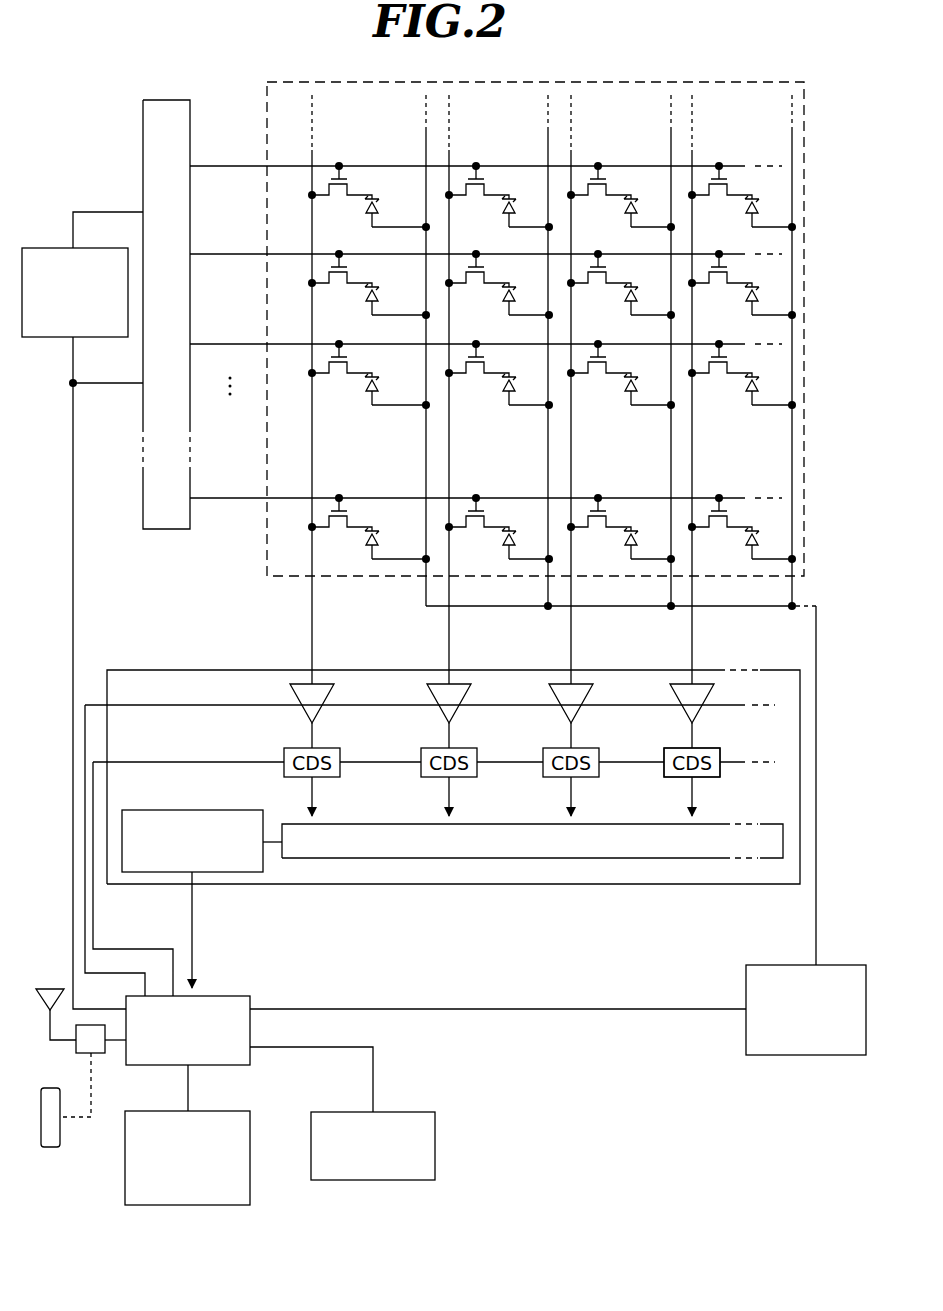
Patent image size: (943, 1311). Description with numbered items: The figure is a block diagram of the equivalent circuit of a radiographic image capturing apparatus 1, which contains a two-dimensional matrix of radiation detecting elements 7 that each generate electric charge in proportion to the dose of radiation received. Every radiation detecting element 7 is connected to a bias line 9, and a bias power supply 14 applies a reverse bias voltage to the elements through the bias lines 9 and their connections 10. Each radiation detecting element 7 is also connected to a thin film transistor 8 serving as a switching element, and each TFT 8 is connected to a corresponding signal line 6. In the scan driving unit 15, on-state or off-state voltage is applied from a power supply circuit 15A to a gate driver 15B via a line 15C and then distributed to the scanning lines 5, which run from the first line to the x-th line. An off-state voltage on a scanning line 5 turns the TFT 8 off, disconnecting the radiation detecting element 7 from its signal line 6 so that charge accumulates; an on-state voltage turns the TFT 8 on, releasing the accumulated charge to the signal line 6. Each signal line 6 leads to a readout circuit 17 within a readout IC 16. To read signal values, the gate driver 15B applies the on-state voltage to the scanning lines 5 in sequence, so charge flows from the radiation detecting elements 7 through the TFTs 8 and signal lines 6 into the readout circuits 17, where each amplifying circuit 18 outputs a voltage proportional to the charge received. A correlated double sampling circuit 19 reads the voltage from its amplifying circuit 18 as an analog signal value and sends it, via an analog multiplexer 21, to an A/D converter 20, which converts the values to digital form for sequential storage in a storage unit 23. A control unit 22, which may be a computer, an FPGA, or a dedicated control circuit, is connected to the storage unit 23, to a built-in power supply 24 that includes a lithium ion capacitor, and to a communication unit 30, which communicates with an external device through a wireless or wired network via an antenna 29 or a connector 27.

The radiographic image capturing apparatus 1 is at (336, 56).
The scanning line 5 is at (197, 164).
The signal line 6 is at (312, 150).
The radiation detecting element 7 is at (388, 206).
The thin film transistor 8 is at (352, 180).
The bias line 9 is at (425, 305).
The connection 10 is at (648, 610).
The bias power supply 14 is at (768, 1057).
The scan driving unit 15 is at (144, 531).
The power supply circuit 15A is at (52, 247).
The gate driver 15B is at (163, 97).
The line 15C is at (122, 208).
The readout IC 16 is at (553, 884).
The readout circuit 17 is at (430, 726).
The amplifying circuit 18 is at (697, 717).
The correlated double sampling circuit 19 is at (702, 772).
The A/D converter 20 is at (207, 812).
The analog multiplexer 21 is at (766, 823).
The control unit 22 is at (245, 995).
The storage unit 23 is at (437, 1145).
The built-in power supply 24 is at (238, 1110).
The connector 27 is at (59, 1147).
The antenna 29 is at (48, 980).
The communication unit 30 is at (100, 1055).